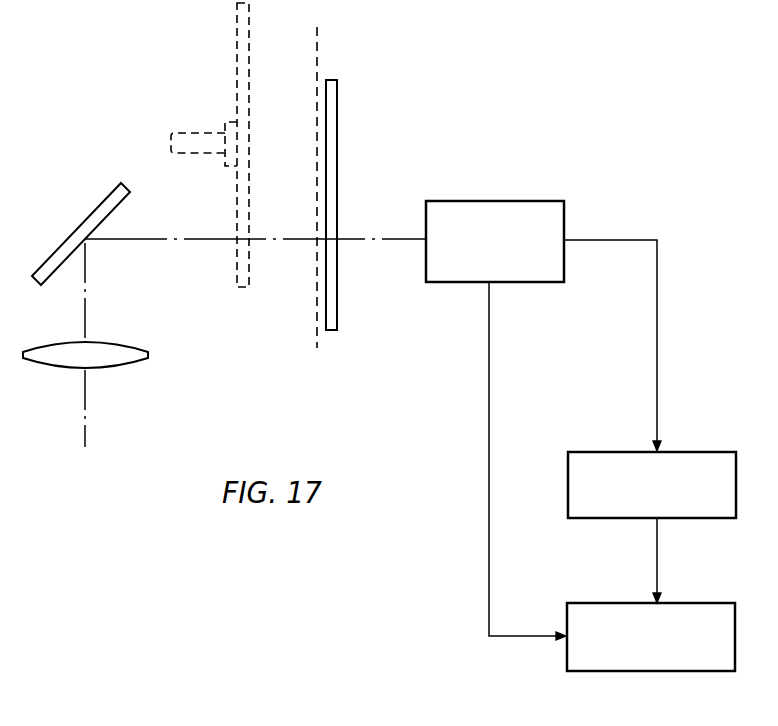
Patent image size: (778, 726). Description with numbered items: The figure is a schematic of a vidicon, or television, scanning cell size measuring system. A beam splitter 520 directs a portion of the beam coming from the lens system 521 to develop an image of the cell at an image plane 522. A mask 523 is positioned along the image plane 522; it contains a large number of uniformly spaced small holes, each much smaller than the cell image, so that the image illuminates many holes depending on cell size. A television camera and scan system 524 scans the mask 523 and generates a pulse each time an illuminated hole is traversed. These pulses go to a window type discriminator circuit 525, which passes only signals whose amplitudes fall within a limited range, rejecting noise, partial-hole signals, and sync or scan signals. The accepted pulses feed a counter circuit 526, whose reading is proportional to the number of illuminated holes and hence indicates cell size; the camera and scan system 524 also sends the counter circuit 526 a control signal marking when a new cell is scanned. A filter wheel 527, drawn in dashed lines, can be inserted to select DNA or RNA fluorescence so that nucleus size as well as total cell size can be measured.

The beam splitter 520 is at (78, 231).
The lens system 521 is at (135, 362).
The image plane 522 is at (318, 60).
The mask 523 is at (338, 113).
The television camera and scan system 524 is at (478, 200).
The window type discriminator circuit 525 is at (620, 451).
The counter circuit 526 is at (613, 603).
The filter wheel 527 is at (237, 60).